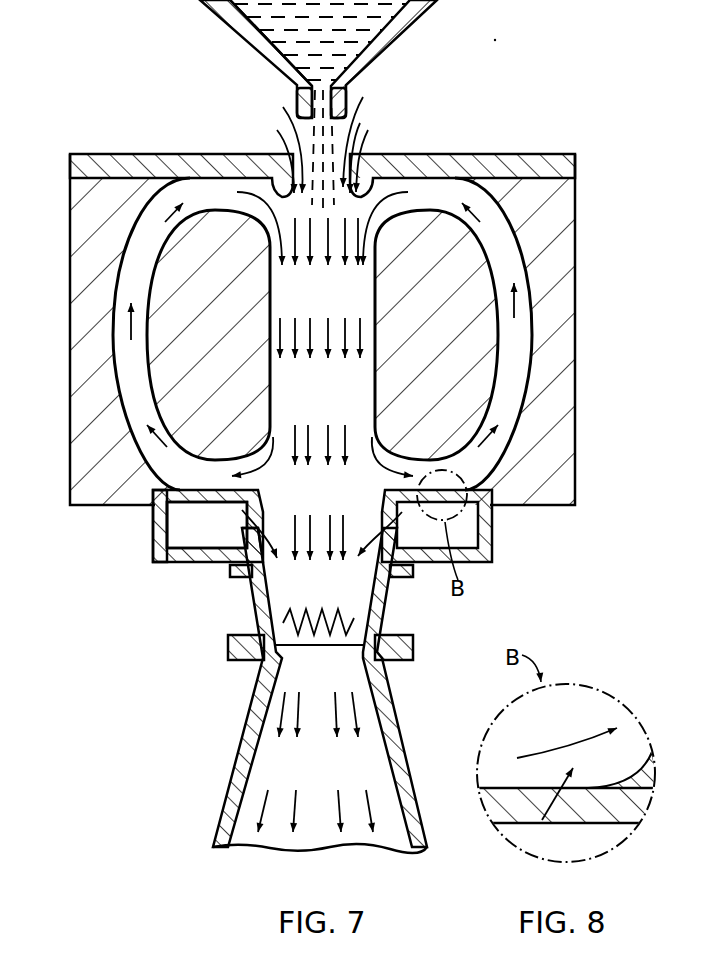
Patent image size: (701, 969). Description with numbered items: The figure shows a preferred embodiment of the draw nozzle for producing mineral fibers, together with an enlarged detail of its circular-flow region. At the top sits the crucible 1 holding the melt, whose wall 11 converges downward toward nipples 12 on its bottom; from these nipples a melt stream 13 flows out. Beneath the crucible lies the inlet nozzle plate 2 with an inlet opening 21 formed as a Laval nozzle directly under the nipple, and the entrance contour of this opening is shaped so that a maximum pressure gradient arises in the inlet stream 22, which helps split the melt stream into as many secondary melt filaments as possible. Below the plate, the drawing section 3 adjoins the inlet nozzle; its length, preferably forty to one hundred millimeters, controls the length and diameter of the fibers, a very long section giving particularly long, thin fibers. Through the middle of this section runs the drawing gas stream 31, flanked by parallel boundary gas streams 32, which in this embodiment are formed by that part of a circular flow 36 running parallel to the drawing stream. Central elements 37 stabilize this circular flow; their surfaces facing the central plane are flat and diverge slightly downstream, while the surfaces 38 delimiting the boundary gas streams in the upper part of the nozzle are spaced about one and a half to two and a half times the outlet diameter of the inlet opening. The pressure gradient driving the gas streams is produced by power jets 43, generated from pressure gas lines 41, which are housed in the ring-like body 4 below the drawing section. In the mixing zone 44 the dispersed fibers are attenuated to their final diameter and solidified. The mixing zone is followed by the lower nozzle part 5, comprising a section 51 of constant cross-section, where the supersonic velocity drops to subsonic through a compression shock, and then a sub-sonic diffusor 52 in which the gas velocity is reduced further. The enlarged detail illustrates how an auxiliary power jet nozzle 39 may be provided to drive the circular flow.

In FIG. 7, the crucible 1 is at (212, 12).
In FIG. 7, the funnel wall 11 is at (250, 34).
In FIG. 7, the inlet nozzle plate 2 is at (297, 100).
In FIG. 7, the nipple 12 is at (363, 97).
In FIG. 7, the inlet stream 22 is at (360, 123).
In FIG. 7, the inlet opening 21 is at (293, 147).
In FIG. 7, the melt stream 13 is at (327, 137).
In FIG. 7, the drawing section 3 is at (68, 262).
In FIG. 7, the drawing gas stream 31 is at (335, 285).
In FIG. 7, the parallel boundary gas stream 32 is at (353, 340).
In FIG. 7, the circular flow 36 is at (513, 393).
In FIG. 7, the surface delimiting the parallel boundary gas streams 38 is at (380, 392).
In FIG. 7, the central element 37 is at (447, 417).
In FIG. 7, the ring 4 is at (152, 538).
In FIG. 7, the pressure gas line 41 is at (163, 563).
In FIG. 7, the power jet 43 is at (193, 527).
In FIG. 7, the mixing zone 44 is at (317, 587).
In FIG. 7, the nozzle 5 is at (313, 690).
In FIG. 7, the section of constant cross-section 51 is at (355, 626).
In FIG. 7, the sub-sonic diffusor 52 is at (398, 748).
In FIG. 8, the auxiliary power jet nozzle 39 is at (542, 820).